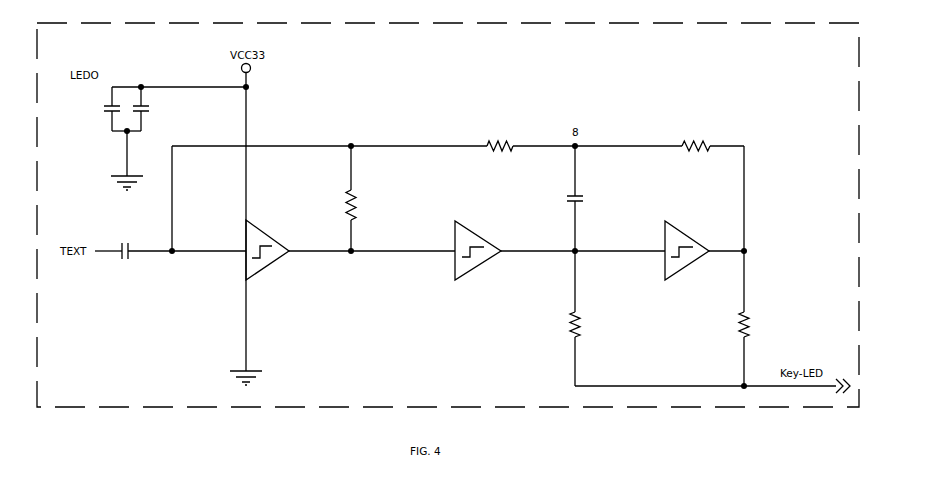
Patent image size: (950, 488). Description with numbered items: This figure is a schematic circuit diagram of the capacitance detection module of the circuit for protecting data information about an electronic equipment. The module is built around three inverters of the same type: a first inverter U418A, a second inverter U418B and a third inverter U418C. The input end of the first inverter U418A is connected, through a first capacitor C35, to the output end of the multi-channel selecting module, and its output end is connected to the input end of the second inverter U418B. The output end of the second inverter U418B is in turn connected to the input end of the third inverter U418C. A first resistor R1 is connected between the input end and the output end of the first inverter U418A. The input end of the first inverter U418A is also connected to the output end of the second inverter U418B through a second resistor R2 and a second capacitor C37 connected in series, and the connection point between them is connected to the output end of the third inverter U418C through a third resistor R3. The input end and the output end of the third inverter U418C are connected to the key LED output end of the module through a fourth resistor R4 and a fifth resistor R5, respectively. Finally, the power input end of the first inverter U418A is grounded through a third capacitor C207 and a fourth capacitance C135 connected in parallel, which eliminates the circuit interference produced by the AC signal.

The third capacitor C207 is at (93, 109).
The fourth capacitance C135 is at (159, 109).
The first capacitor C35 is at (129, 249).
The second capacitor C37 is at (594, 207).
The first resistor R1 is at (373, 198).
The second resistor R2 is at (502, 144).
The third resistor R3 is at (692, 146).
The fourth resistor R4 is at (593, 327).
The fifth resistor R5 is at (762, 327).
The first inverter U418A is at (259, 248).
The second inverter U418B is at (477, 249).
The third inverter U418C is at (680, 249).